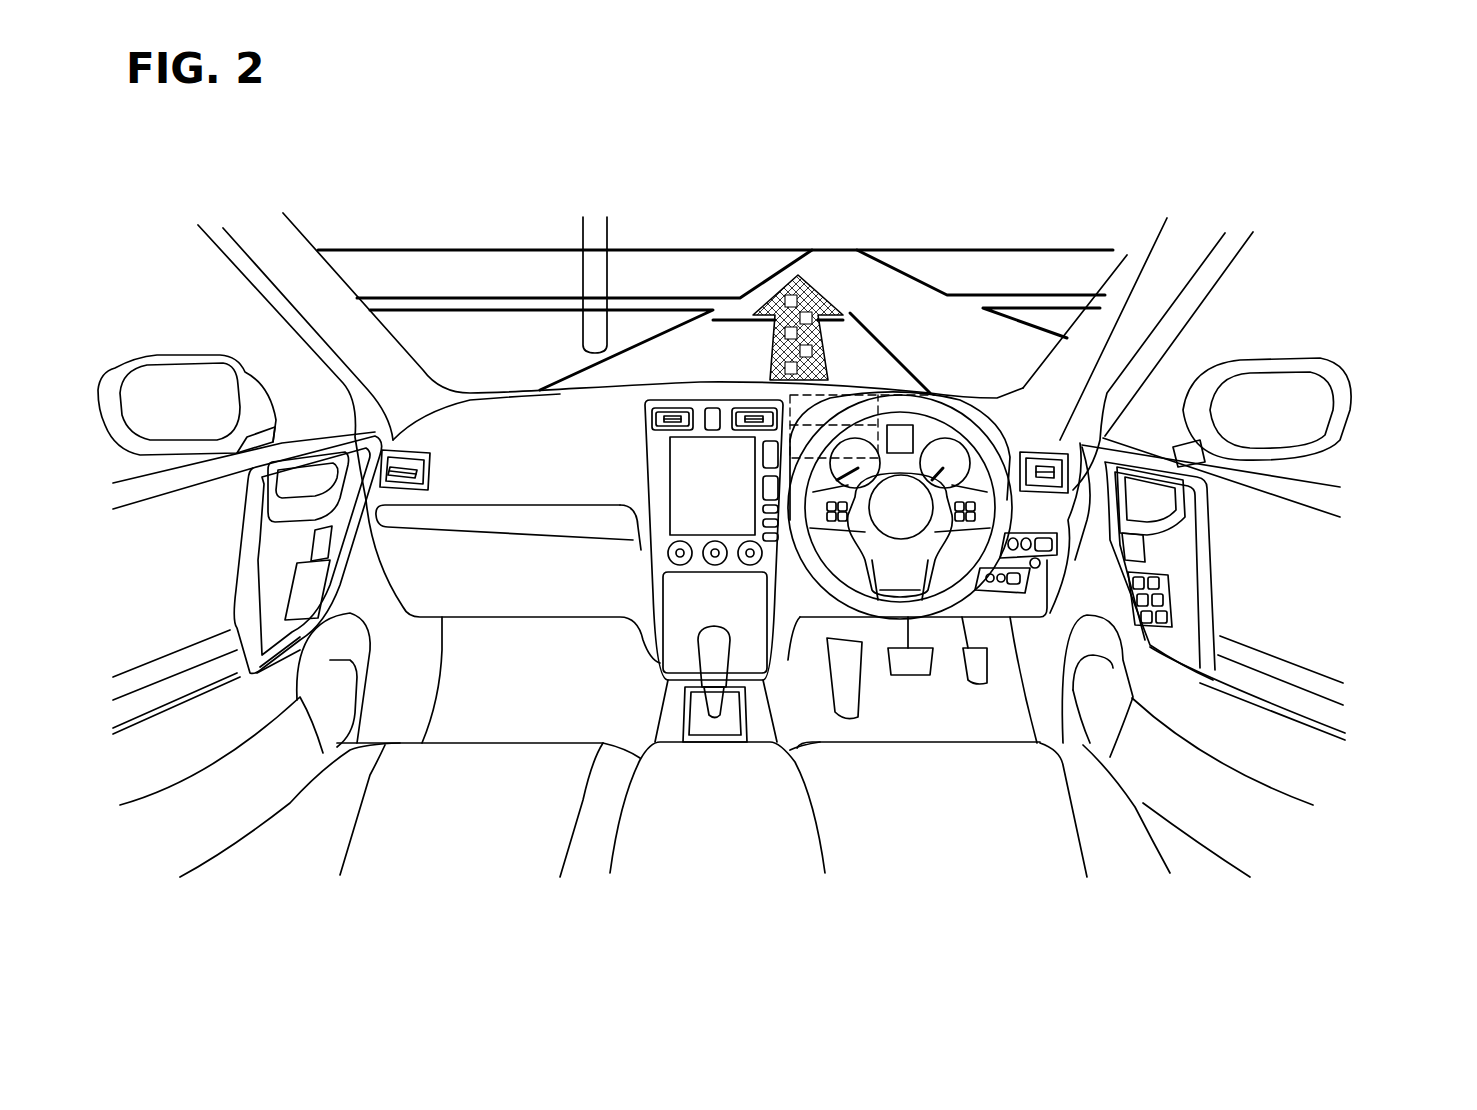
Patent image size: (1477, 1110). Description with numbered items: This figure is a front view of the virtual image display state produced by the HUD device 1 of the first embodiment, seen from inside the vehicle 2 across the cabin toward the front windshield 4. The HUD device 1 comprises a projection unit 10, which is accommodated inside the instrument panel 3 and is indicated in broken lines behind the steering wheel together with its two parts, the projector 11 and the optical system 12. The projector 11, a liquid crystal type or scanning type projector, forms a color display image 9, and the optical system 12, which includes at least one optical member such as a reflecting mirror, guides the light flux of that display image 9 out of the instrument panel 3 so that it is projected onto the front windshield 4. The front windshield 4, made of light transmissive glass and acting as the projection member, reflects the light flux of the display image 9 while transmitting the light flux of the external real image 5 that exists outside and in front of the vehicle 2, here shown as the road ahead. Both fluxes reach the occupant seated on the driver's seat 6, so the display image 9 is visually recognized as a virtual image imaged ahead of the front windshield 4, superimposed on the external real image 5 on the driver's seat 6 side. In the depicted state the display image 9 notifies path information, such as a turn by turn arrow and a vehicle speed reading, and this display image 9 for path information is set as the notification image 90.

The HUD device 1 is at (870, 488).
The vehicle 2 is at (340, 264).
The instrument panel 3 is at (905, 392).
The front windshield 4 is at (1127, 252).
The external real image 5 is at (770, 305).
The driver's seat 6 is at (1050, 833).
The display image 9 is at (667, 355).
The notification image 90 is at (815, 284).
The projection unit 10 is at (1426, 383).
The projector 11 is at (887, 442).
The optical system 12 is at (935, 413).